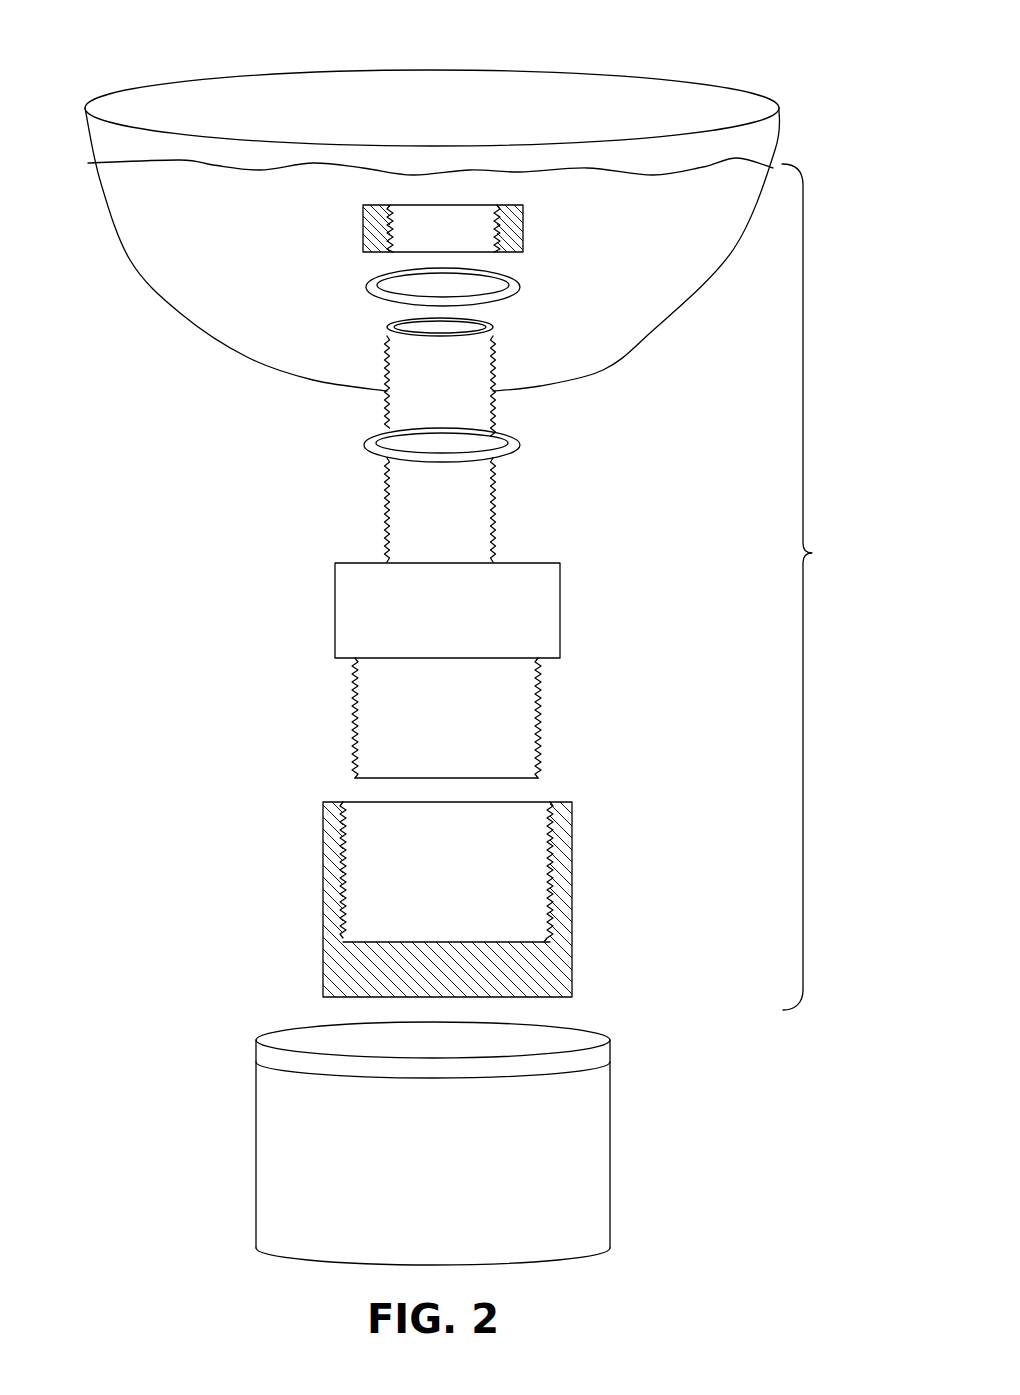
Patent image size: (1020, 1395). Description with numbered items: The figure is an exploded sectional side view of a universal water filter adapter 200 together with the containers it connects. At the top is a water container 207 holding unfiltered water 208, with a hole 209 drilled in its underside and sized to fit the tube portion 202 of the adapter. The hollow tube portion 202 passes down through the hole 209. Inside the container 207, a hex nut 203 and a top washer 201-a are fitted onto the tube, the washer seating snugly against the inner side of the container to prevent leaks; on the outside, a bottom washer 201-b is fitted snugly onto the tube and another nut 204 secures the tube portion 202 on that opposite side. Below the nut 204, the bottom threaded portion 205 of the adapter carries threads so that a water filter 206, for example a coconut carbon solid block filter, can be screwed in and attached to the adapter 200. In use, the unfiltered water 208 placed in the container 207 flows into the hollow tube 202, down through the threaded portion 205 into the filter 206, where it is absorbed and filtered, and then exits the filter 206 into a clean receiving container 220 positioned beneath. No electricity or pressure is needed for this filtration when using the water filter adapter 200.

The universal water filter adapter 200 is at (825, 587).
The top washer 201-a is at (367, 287).
The bottom washer 201-b is at (366, 440).
The tube portion 202 is at (493, 488).
The hex nut 203 is at (363, 220).
The nut 204 is at (560, 603).
The bottom threaded portion 205 is at (538, 712).
The water filter 206 is at (572, 875).
The water container 207 is at (355, 70).
The unfiltered water 208 is at (667, 266).
The hole 209 is at (370, 379).
The receiving container 220 is at (453, 1203).